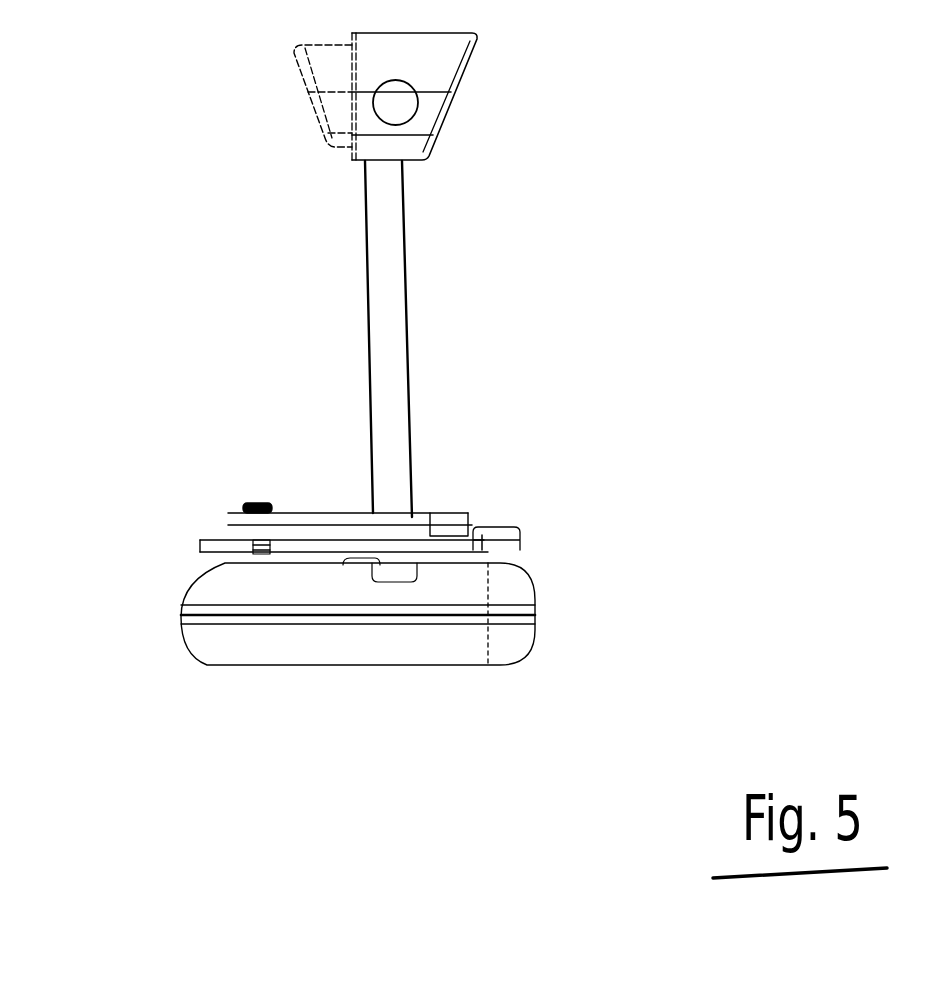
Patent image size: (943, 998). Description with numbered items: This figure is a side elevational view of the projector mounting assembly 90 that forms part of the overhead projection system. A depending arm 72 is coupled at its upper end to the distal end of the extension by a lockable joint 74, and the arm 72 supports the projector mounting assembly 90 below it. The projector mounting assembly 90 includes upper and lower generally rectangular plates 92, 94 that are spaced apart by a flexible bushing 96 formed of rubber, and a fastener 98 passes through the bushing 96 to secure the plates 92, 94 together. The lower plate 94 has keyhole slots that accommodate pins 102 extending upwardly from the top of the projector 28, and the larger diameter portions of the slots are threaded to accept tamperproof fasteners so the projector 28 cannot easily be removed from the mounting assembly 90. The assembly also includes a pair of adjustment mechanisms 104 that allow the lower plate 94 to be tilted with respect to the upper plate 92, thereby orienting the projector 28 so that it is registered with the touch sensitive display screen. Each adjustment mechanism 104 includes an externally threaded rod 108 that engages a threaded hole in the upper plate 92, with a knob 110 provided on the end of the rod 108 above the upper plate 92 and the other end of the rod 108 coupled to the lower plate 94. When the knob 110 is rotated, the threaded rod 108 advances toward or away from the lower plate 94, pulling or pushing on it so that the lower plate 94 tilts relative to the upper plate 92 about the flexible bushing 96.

The projector 28 is at (373, 650).
The depending arm 72 is at (395, 253).
The lockable joint 74 is at (443, 63).
The projector mounting assembly 90 is at (560, 447).
The upper plate 92 is at (323, 517).
The lower plate 94 is at (303, 547).
The flexible bushing 96 is at (453, 532).
The fastener 98 is at (438, 530).
The pins 102 is at (213, 562).
The adjustment mechanism 104 is at (171, 508).
The externally threaded rod 108 is at (257, 533).
The knob 110 is at (258, 503).